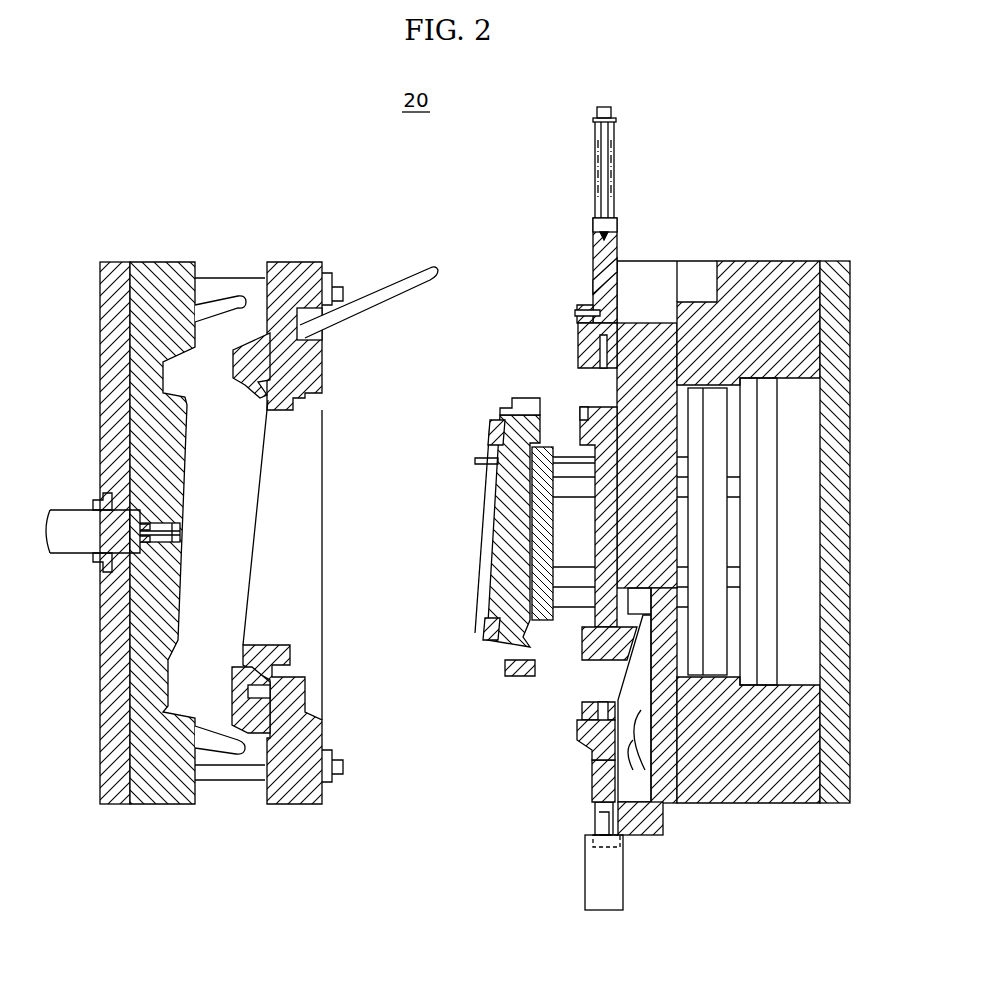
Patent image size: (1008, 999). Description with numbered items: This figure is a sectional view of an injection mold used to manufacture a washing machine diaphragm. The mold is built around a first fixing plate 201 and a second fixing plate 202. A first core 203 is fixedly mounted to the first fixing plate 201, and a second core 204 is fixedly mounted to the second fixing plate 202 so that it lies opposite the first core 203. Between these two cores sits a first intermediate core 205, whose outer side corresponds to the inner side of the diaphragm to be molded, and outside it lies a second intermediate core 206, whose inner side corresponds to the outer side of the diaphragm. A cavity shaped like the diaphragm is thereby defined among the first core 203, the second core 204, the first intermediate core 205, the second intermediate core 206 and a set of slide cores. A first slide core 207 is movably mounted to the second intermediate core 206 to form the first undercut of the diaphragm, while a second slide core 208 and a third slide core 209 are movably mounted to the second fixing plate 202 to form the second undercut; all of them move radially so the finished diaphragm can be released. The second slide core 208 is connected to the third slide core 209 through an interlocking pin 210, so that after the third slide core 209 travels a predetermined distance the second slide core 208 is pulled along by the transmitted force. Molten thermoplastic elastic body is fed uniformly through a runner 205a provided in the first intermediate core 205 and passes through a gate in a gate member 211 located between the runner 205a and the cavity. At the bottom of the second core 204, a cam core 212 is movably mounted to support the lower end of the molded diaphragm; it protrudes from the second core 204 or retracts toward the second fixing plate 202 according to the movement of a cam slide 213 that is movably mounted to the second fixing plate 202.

The first fixing plate 201 is at (108, 260).
The second fixing plate 202 is at (655, 318).
The first core 203 is at (167, 260).
The second core 204 is at (588, 400).
The first intermediate core 205 is at (517, 398).
The runner 205a is at (488, 518).
The second intermediate core 206 is at (294, 260).
The first slide core 207 is at (252, 348).
The second slide core 208 is at (575, 312).
The third slide core 209 is at (583, 315).
The interlocking pin 210 is at (580, 742).
The gate member 211 is at (492, 420).
The cam core 212 is at (583, 648).
The cam slide 213 is at (643, 741).